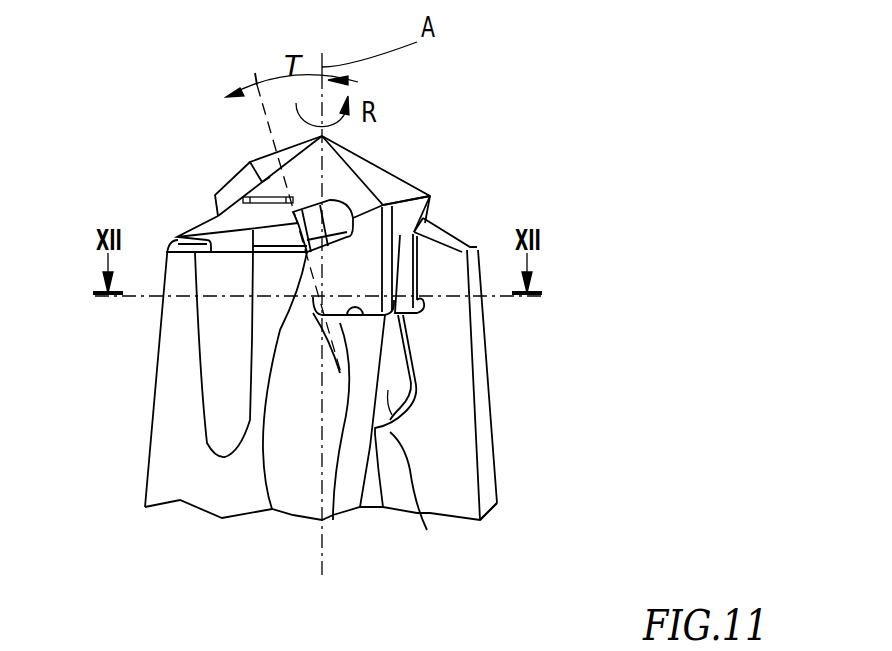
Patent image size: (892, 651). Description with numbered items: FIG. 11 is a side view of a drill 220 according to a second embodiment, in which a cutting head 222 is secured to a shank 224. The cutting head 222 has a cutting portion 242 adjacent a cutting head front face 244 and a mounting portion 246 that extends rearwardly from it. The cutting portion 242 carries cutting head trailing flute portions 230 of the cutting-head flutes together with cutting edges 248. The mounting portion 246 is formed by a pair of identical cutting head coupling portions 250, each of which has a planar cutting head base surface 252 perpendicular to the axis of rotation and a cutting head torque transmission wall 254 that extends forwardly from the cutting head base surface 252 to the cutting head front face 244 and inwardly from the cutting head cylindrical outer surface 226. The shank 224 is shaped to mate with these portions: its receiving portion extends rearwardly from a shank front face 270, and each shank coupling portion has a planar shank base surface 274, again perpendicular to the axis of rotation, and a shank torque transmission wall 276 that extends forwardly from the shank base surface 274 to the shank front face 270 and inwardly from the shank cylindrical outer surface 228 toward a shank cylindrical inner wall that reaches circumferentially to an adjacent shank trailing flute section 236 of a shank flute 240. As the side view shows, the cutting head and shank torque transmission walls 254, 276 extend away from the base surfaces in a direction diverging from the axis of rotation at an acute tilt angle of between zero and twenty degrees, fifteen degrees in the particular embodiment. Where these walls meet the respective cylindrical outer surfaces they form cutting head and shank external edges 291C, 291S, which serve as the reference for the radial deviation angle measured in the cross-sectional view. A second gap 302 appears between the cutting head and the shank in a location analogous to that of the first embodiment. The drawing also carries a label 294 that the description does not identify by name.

The drill 220 is at (660, 167).
The cutting head 222 is at (296, 176).
The shank 224 is at (485, 365).
The cutting head cylindrical outer surface 226 is at (367, 283).
The shank cylindrical outer surface 228 is at (180, 460).
The cutting head trailing flute portion 230 is at (232, 193).
The shank trailing flute section 236 is at (453, 417).
The shank flute 240 is at (458, 458).
The cutting portion 242 is at (403, 172).
The cutting head front face 244 is at (370, 167).
The mounting portion 246 is at (325, 310).
The cutting edges 248 is at (250, 162).
The cutting head coupling portion 250 is at (417, 513).
The cutting head base surface 252 is at (333, 520).
The cutting head torque transmission wall 254 is at (290, 265).
The shank front face 270 is at (213, 220).
The shank base surface 274 is at (417, 378).
The shank torque transmission wall 276 is at (317, 258).
The cutting head external edge 291C is at (272, 509).
The shank external edge 291S is at (427, 210).
The recess 294 is at (218, 415).
The second gap 302 is at (385, 507).